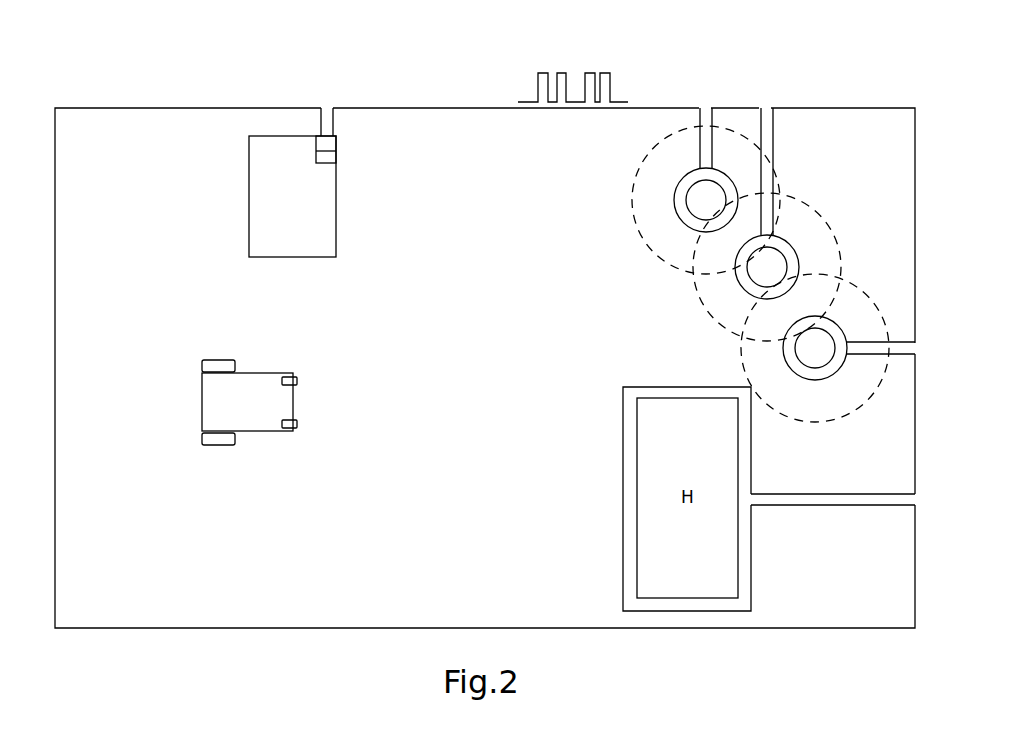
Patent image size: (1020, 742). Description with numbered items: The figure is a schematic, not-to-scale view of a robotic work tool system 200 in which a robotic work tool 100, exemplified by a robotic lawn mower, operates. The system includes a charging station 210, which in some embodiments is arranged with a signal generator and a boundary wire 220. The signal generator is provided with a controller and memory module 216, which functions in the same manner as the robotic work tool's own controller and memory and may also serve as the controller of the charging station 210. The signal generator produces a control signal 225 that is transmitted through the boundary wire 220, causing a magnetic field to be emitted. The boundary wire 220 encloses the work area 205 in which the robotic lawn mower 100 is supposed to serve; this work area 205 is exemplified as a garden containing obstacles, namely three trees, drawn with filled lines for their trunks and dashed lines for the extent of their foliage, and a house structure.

The robotic work tool 100 is at (249, 402).
The robotic work tool system 200 is at (228, 101).
The work area 205 is at (157, 137).
The charging station 210 is at (249, 175).
The controller and memory module 216 is at (332, 145).
The boundary wire 220 is at (835, 108).
The control signal 225 is at (590, 73).